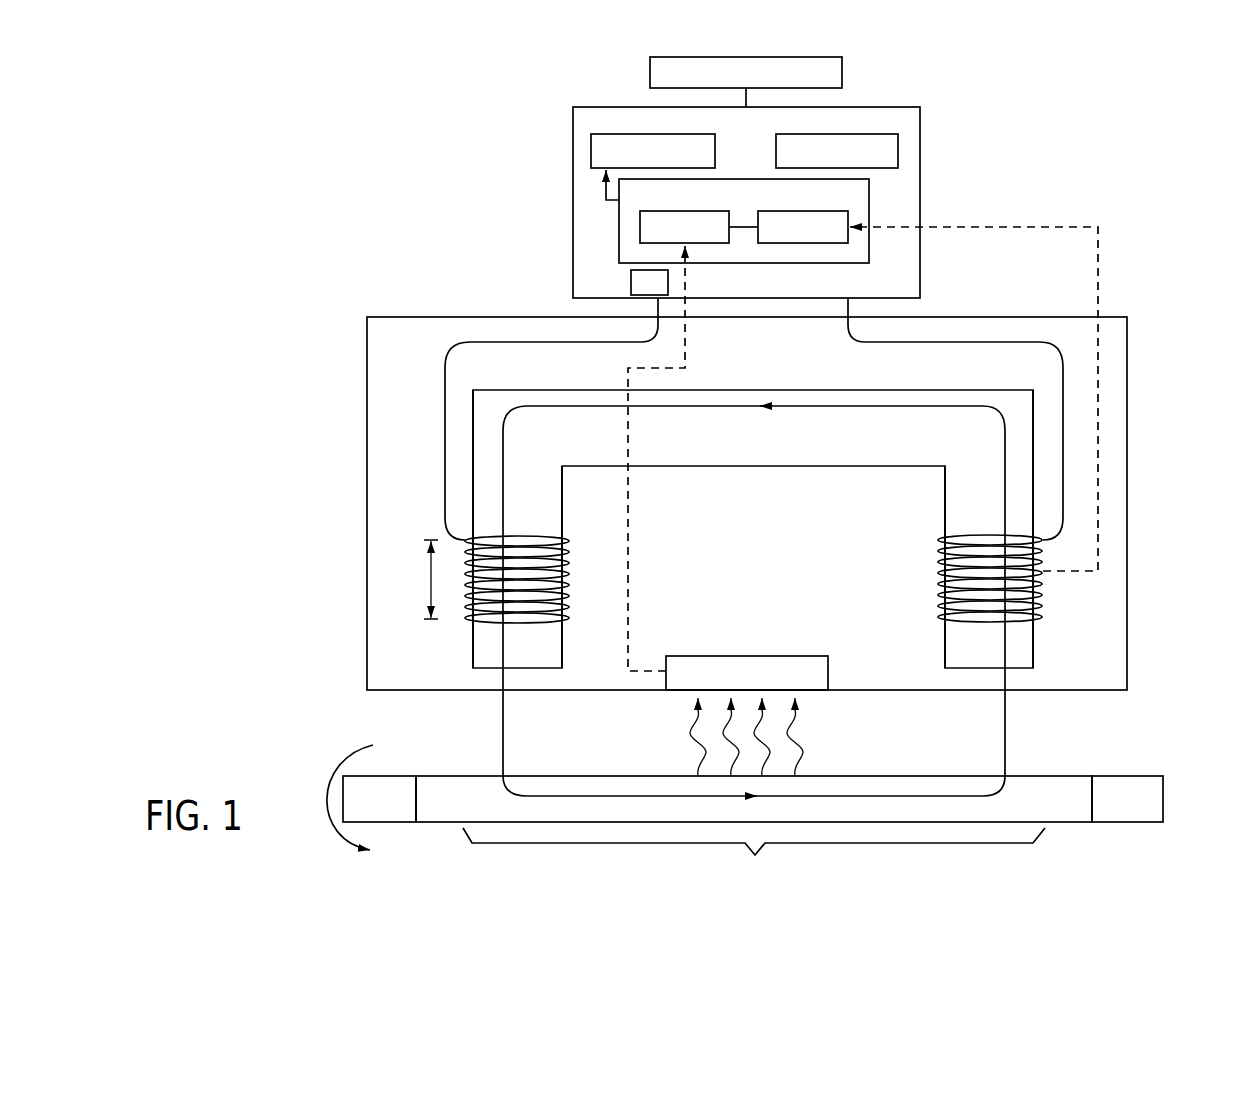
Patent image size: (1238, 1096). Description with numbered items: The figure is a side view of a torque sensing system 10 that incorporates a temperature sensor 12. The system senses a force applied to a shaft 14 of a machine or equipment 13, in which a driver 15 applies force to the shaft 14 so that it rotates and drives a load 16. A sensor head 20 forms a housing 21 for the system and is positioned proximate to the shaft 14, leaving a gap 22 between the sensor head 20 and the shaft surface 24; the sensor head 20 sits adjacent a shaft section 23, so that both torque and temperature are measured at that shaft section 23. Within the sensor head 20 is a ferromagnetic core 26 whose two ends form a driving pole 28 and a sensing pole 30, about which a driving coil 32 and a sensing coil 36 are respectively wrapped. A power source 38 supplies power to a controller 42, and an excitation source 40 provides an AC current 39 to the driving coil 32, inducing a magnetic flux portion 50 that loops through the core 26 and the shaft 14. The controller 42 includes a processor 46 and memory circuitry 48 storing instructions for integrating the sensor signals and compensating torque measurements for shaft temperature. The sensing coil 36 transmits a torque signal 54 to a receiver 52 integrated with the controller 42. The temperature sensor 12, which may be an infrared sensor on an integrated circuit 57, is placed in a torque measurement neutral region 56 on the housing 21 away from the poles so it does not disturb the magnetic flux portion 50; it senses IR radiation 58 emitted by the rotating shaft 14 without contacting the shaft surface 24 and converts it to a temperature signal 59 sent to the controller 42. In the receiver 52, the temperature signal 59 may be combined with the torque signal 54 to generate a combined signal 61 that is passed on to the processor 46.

The torque sensing system 10 is at (1101, 179).
The temperature sensor 12 is at (830, 670).
The machine or equipment 13 is at (288, 749).
The shaft 14 is at (1066, 829).
The driver 15 is at (382, 822).
The load 16 is at (1163, 797).
The sensor head 20 is at (744, 504).
The housing 21 is at (1127, 492).
The gap 22 is at (1027, 738).
The shaft section 23 is at (754, 855).
The shaft surface 24 is at (968, 776).
The core 26 is at (822, 390).
The driving pole 28 is at (480, 669).
The sensing pole 30 is at (1027, 668).
The driving coil 32 is at (470, 600).
The sensing coil 36 is at (1040, 602).
The power source 38 is at (649, 71).
The AC current 39 is at (512, 342).
The excitation source 40 is at (631, 283).
The controller 42 is at (920, 145).
The processor 46 is at (591, 152).
The memory circuitry 48 is at (898, 166).
The magnetic flux portion 50 is at (557, 406).
The receiver 52 is at (619, 243).
The torque signal 54 is at (1037, 241).
The torque measurement neutral region 56 is at (671, 717).
The integrated circuit 57 is at (840, 683).
The IR radiation 58 is at (793, 757).
The temperature signal 59 is at (686, 336).
The combined signal 61 is at (604, 197).